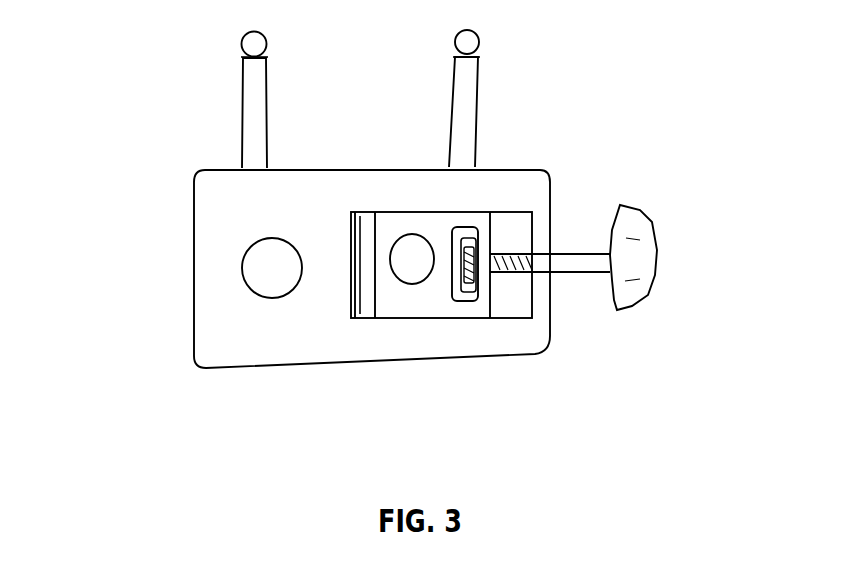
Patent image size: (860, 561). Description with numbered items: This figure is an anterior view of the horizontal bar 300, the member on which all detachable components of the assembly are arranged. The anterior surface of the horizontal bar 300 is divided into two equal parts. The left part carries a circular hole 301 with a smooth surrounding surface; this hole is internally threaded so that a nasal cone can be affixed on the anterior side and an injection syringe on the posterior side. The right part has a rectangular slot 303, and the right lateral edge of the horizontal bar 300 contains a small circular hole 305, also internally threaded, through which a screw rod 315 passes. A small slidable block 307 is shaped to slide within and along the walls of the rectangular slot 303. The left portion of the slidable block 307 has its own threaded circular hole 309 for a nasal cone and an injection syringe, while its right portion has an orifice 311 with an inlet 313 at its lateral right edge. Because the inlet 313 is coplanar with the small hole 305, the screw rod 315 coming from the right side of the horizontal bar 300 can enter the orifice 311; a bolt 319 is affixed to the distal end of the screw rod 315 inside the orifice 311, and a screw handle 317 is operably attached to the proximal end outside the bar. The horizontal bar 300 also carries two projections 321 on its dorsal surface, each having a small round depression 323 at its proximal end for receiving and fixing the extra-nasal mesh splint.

The horizontal bar 300 is at (155, 312).
The circular hole 301 is at (242, 277).
The rectangular slot 303 is at (532, 210).
The small circular hole 305 is at (550, 263).
The slidable block 307 is at (592, 330).
The circular hole 309 is at (598, 318).
The orifice 311 is at (460, 293).
The inlet 313 is at (619, 298).
The screw rod 315 is at (662, 191).
The screw handle 317 is at (657, 237).
The bolt 319 is at (613, 309).
The projections 321 is at (478, 87).
The round depression 323 is at (478, 32).